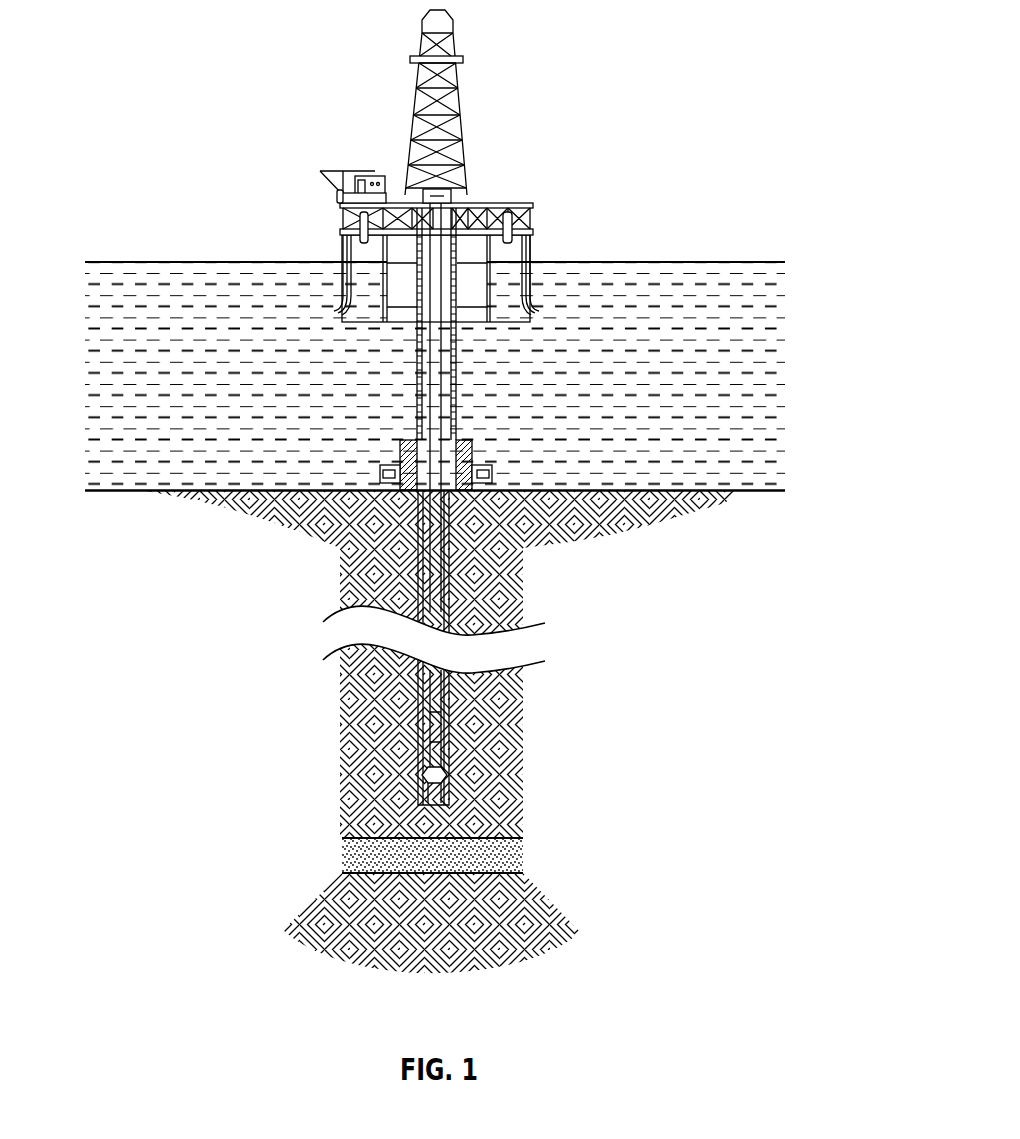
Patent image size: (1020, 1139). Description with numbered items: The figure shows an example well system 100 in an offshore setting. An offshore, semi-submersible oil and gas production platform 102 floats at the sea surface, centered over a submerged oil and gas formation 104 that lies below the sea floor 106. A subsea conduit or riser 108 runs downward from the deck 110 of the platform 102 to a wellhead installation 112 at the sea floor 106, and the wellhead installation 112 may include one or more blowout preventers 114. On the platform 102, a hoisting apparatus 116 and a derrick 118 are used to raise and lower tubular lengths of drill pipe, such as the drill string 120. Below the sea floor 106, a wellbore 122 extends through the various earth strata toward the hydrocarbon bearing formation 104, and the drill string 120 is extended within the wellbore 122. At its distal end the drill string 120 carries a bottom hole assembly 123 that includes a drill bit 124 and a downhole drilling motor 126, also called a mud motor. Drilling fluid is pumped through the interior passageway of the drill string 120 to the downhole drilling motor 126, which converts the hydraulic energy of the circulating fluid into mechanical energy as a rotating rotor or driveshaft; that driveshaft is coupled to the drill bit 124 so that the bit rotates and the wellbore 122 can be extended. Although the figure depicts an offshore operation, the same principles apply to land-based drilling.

The well system 100 is at (650, 106).
The production platform 102 is at (532, 205).
The formation 104 is at (500, 862).
The sea floor 106 is at (650, 498).
The riser 108 is at (413, 363).
The deck 110 is at (532, 236).
The wellhead installation 112 is at (472, 446).
The blowout preventer 114 is at (492, 478).
The hoisting apparatus 116 is at (453, 195).
The derrick 118 is at (458, 42).
The drill string 120 is at (437, 402).
The wellbore 122 is at (453, 607).
The bottom hole assembly 123 is at (404, 718).
The drill bit 124 is at (420, 778).
The downhole drilling motor 126 is at (437, 755).